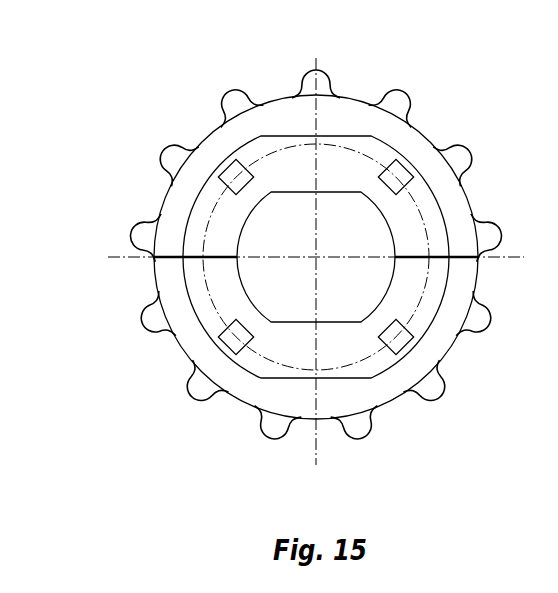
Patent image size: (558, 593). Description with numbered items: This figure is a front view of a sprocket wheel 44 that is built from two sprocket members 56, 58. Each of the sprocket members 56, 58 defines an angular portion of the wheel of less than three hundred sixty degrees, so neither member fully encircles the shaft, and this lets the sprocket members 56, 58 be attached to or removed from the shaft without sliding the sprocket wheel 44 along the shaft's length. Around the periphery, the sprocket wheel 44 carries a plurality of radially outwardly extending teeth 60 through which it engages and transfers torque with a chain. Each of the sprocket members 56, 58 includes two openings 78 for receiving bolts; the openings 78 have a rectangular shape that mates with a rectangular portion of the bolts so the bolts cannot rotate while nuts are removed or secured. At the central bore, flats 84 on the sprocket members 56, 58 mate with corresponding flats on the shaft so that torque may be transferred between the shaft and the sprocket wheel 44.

The sprocket wheel 44 is at (479, 92).
The sprocket member 56 is at (458, 212).
The sprocket member 58 is at (332, 397).
The teeth 60 is at (141, 239).
The openings 78 is at (224, 177).
The flats 84 is at (332, 193).